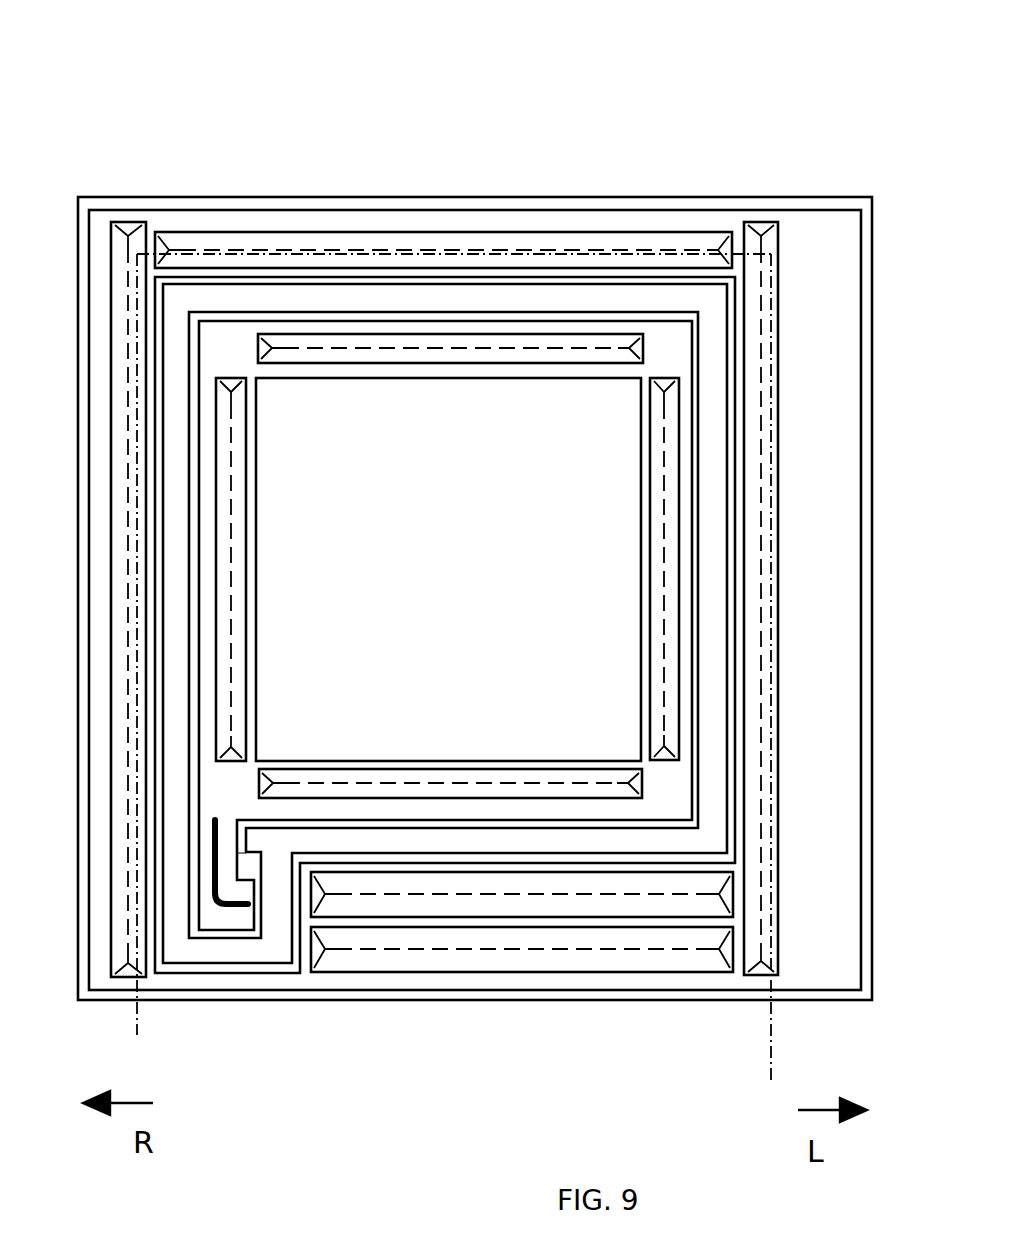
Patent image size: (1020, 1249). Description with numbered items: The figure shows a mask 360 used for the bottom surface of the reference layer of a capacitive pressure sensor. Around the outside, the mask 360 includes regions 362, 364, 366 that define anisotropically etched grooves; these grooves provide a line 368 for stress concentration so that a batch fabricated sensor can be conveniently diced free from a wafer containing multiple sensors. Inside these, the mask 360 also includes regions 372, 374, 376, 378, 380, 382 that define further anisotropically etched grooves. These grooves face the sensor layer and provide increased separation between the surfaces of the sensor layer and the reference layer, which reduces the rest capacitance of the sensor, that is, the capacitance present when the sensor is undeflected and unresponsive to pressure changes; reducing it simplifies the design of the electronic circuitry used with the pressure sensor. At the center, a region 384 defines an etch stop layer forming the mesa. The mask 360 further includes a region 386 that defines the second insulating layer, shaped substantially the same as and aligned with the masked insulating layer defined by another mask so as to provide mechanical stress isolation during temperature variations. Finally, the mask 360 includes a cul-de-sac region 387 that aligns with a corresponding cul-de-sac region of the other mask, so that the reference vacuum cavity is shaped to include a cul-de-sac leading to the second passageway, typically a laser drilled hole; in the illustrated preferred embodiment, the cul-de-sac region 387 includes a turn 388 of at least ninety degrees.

The mask 360 is at (768, 87).
The region 362 is at (757, 232).
The region 364 is at (130, 248).
The region 366 is at (185, 243).
The line 368 is at (771, 1063).
The region 372 is at (233, 503).
The region 374 is at (468, 342).
The region 376 is at (660, 515).
The region 378 is at (377, 778).
The region 380 is at (383, 903).
The region 382 is at (482, 957).
The region 384 is at (441, 580).
The region 386 is at (265, 293).
The cul-de-sac region 387 is at (218, 853).
The turn 388 is at (228, 908).